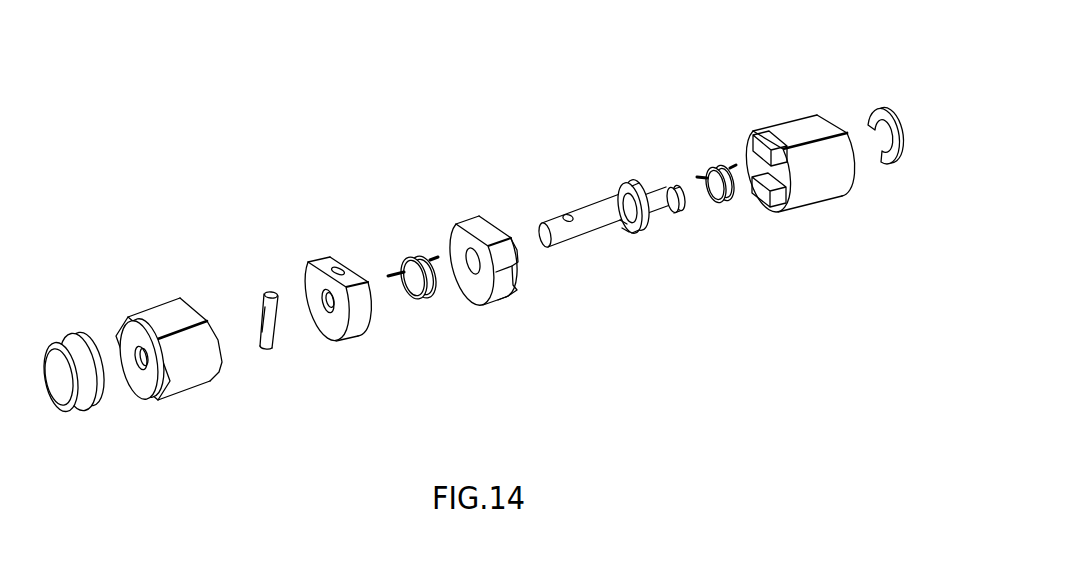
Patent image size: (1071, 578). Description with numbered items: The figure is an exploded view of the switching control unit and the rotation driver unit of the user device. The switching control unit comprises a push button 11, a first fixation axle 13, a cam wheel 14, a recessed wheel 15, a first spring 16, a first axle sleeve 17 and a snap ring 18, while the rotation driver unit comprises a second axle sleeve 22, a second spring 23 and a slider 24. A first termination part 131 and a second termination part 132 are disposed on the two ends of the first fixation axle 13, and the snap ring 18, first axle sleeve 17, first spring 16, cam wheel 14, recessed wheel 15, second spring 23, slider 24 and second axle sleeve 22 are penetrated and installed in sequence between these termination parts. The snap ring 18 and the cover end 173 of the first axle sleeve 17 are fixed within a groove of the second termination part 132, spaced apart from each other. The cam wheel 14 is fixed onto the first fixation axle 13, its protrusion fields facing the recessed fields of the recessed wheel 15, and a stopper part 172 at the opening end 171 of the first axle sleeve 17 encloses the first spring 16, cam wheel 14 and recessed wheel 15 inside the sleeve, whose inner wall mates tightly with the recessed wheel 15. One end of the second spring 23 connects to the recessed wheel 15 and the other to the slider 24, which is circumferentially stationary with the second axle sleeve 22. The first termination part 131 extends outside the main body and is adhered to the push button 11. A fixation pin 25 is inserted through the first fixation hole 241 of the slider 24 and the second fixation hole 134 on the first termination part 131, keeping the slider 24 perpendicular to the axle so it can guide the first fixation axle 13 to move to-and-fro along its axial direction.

The push button 11 is at (73, 348).
The second axle sleeve 22 is at (170, 320).
The fixation pin 25 is at (272, 293).
The slider 24 is at (352, 240).
The first fixation hole 241 is at (337, 262).
The second spring 23 is at (413, 263).
The recessed wheel 15 is at (485, 228).
The first fixation axle 13 is at (604, 181).
The first termination part 131 is at (543, 223).
The second fixation hole 134 is at (570, 223).
The cam wheel 14 is at (637, 187).
The second termination part 132 is at (677, 187).
The first spring 16 is at (717, 167).
The first axle sleeve 17 is at (815, 129).
The opening end 171 is at (785, 152).
The stopper part 172 is at (765, 190).
The cover end 173 is at (842, 135).
The snap ring 18 is at (880, 107).